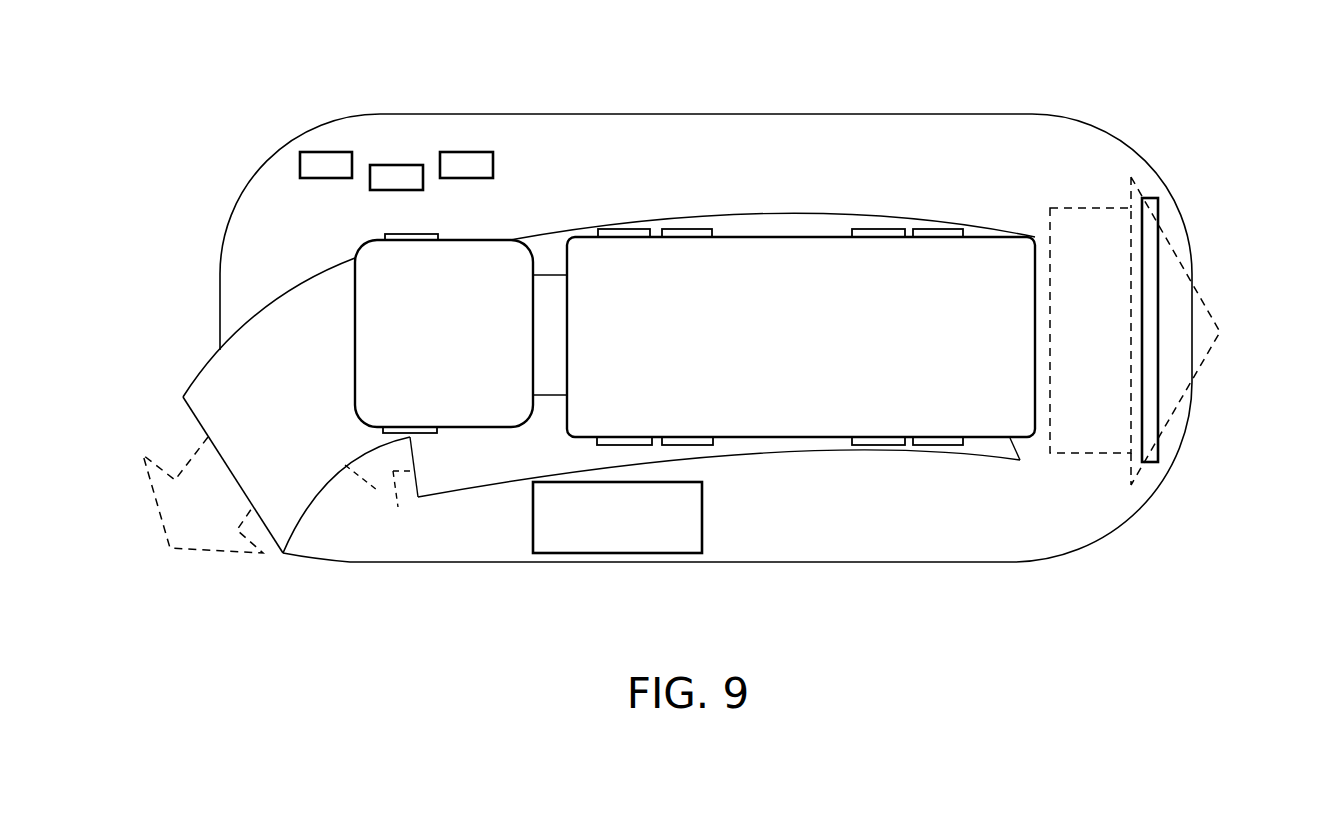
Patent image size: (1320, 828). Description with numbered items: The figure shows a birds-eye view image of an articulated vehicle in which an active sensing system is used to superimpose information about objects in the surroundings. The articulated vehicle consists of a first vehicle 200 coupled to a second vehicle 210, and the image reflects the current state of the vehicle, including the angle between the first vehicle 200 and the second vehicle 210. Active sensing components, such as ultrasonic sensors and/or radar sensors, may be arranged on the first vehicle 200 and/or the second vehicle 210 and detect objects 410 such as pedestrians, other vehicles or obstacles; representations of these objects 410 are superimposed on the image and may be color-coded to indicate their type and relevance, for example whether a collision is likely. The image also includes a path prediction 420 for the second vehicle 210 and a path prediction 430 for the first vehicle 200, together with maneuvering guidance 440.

The first vehicle 200 is at (500, 240).
The second vehicle 210 is at (828, 236).
The object 410 is at (347, 153).
The path prediction 420 is at (380, 478).
The path prediction 430 is at (298, 493).
The maneuvering guidance 440 is at (1098, 224).